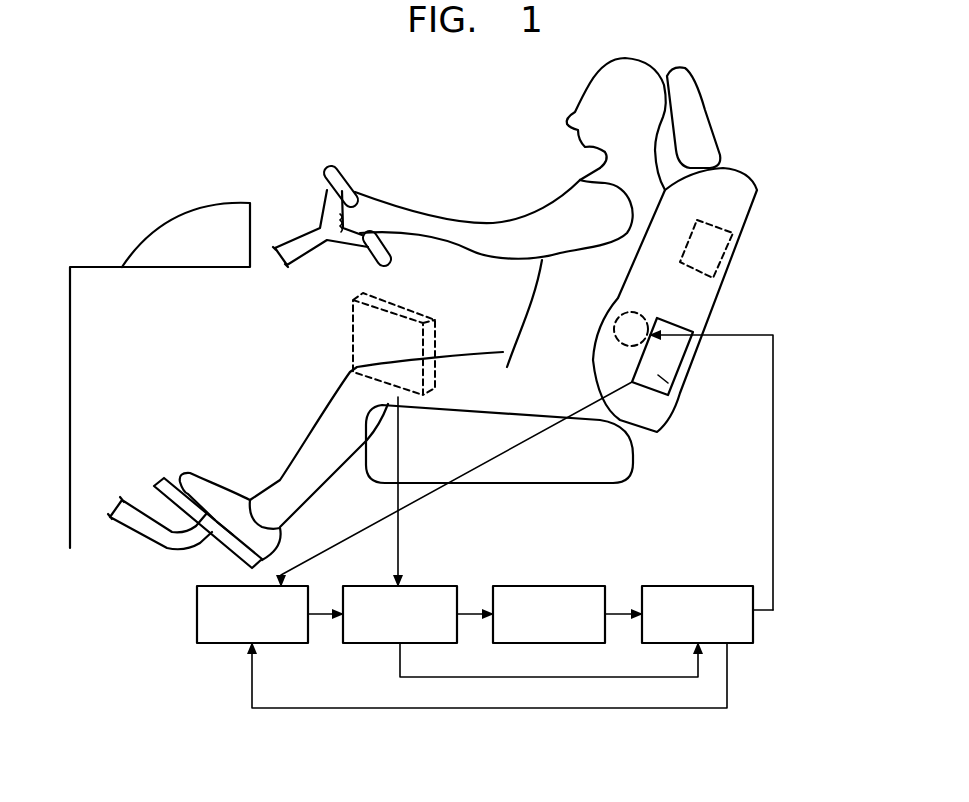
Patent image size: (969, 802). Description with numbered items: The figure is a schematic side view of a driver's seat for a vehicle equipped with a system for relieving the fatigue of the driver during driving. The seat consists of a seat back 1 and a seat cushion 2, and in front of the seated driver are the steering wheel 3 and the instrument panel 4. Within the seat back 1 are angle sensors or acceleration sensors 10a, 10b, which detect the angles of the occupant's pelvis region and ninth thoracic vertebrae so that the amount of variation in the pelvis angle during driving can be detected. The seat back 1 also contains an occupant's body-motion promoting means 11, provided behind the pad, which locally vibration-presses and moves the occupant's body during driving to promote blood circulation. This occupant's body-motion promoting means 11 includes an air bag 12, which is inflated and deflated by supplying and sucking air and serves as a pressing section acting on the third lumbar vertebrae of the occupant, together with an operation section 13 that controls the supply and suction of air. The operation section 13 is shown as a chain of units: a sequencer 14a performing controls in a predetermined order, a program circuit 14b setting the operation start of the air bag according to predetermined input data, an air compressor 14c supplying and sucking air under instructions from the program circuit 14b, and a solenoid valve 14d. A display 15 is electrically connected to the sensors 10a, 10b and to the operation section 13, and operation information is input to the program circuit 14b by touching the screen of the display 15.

The seat back 1 is at (750, 168).
The seat cushion 2 is at (640, 462).
The steering wheel 3 is at (306, 178).
The instrument panel 4 is at (200, 200).
The angle sensor or acceleration sensor 10a is at (677, 392).
The angle sensor or acceleration sensor 10b is at (710, 228).
The occupant's body-motion promoting means 11 is at (688, 319).
The air bag 12 is at (638, 312).
The operation section 13 is at (476, 691).
The sequencer 14a is at (284, 631).
The program circuit 14b is at (429, 631).
The air compressor 14c is at (578, 631).
The solenoid valve 14d is at (697, 614).
The display 15 is at (405, 305).